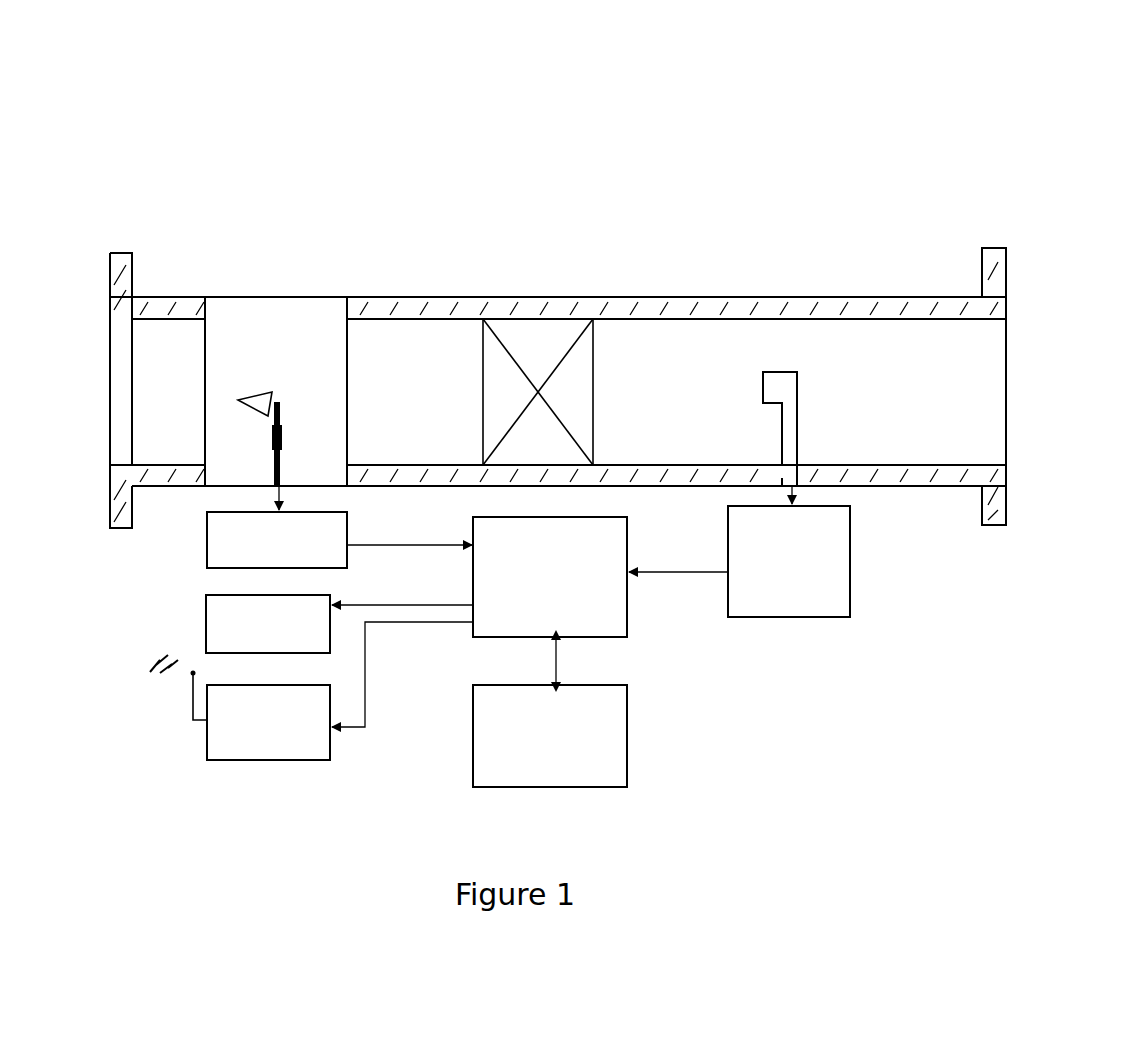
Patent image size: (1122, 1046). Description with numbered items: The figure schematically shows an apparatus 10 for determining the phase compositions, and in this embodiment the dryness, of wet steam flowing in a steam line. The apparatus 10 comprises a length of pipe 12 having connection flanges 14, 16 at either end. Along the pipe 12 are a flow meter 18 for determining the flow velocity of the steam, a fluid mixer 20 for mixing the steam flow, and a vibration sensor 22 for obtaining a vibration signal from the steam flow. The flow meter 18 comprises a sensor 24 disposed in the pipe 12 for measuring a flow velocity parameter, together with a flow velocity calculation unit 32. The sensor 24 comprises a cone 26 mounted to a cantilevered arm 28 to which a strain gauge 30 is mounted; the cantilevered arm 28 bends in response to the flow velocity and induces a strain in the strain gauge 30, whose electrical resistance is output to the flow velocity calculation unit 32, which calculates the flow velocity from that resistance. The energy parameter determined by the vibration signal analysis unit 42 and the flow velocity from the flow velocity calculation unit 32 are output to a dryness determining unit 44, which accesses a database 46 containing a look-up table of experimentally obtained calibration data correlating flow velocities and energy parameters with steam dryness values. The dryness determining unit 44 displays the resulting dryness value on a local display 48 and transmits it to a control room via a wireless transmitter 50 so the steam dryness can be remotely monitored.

The apparatus 10 is at (538, 208).
The pipe 12 is at (721, 298).
The connection flange 14 is at (135, 276).
The connection flange 16 is at (1008, 272).
The flow meter 18 is at (197, 282).
The fluid mixer 20 is at (543, 332).
The vibration sensor 22 is at (798, 418).
The sensor 24 is at (208, 400).
The cone 26 is at (268, 391).
The cantilevered arm 28 is at (282, 437).
The strain gauge 30 is at (272, 441).
The flow velocity calculation unit 32 is at (206, 548).
The vibration signal analysis unit 42 is at (852, 572).
The dryness determining unit 44 is at (628, 540).
The database 46 is at (628, 728).
The local display 48 is at (312, 595).
The wireless transmitter 50 is at (243, 762).